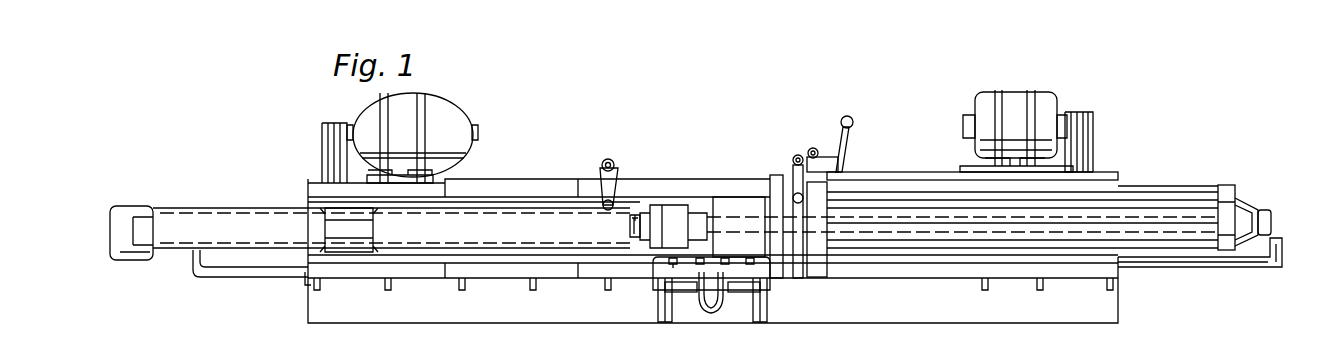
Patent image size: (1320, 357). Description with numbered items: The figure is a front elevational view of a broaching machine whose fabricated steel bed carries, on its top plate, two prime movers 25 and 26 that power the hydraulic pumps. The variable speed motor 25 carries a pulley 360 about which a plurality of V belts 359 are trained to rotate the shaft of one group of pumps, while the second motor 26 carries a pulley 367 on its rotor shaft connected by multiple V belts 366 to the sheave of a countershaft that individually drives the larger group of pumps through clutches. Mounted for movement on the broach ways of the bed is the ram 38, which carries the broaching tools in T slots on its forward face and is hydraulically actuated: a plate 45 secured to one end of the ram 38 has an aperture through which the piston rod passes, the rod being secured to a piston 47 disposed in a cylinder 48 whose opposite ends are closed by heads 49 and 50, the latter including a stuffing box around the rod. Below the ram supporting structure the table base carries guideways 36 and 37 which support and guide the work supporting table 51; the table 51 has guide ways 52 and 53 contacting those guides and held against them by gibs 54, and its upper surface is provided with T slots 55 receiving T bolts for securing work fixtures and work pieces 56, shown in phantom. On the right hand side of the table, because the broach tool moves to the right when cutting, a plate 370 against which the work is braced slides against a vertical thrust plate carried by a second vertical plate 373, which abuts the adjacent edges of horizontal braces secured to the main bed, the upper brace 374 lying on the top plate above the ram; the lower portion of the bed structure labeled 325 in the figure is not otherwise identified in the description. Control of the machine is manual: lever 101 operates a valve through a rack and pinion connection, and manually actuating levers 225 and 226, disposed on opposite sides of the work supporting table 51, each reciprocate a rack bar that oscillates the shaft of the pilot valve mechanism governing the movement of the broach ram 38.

The prime mover 25 is at (460, 110).
The pulley 360 is at (322, 137).
The V belts 359 is at (322, 166).
The cylinder 48 is at (256, 197).
The head 49 is at (122, 258).
The manually actuating lever 225 is at (606, 212).
The piston 47 is at (635, 218).
The head 50 is at (675, 210).
The work pieces 56 is at (740, 197).
The manually actuating lever 226 is at (792, 172).
The lever 101 is at (853, 124).
The upper brace 374 is at (934, 161).
The prime mover 26 is at (985, 95).
The pulley 367 is at (1093, 124).
The V belts 366 is at (1093, 150).
The ram 38 is at (1172, 192).
The plate 45 is at (1238, 190).
The frame base 325 is at (918, 278).
The plate 370 is at (783, 280).
The second vertical plate 373 is at (812, 280).
The T slots 55 is at (670, 268).
The work supporting table 51 is at (655, 280).
The guide way 52 is at (665, 290).
The gibs 54 is at (668, 312).
The guideway 36 is at (686, 312).
The guideway 37 is at (748, 292).
The guide way 53 is at (762, 300).